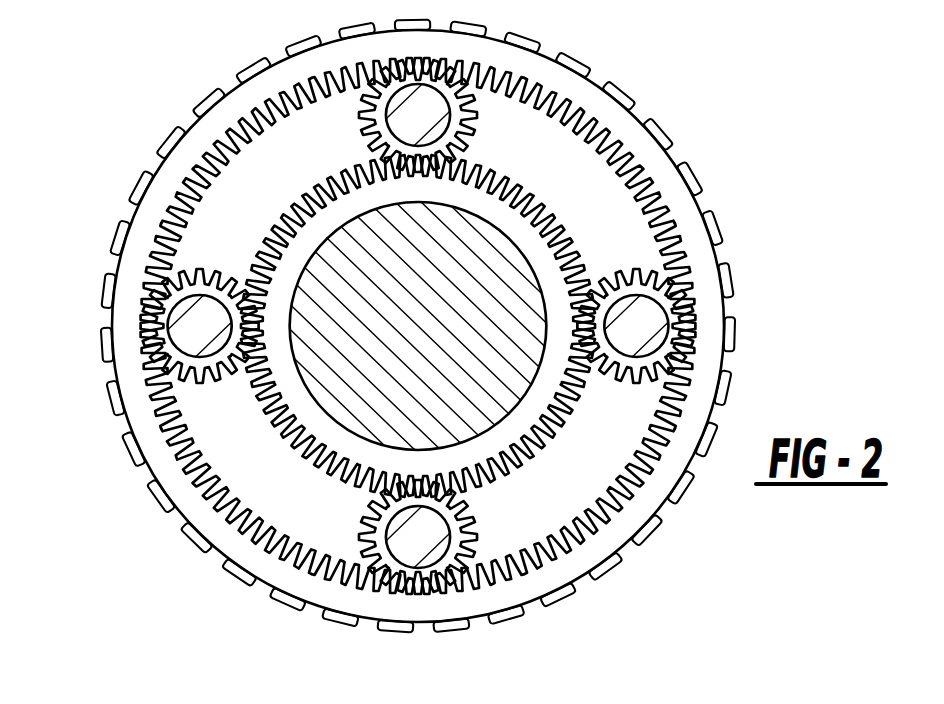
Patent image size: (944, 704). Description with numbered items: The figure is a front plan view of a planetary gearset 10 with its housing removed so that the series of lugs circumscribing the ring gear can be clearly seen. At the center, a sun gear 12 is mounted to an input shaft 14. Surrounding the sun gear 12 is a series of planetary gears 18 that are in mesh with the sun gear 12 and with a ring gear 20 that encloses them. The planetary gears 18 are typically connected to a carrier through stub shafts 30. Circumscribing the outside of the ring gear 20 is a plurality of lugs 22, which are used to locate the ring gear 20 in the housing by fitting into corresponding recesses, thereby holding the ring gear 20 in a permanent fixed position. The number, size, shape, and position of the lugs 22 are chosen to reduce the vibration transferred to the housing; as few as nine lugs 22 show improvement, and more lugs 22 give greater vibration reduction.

The planetary gearset 10 is at (638, 55).
The sun gear 12 is at (532, 209).
The input shaft 14 is at (370, 341).
The planetary gears 18 is at (357, 125).
The ring gear 20 is at (230, 540).
The lugs 22 is at (162, 143).
The stub shafts 30 is at (431, 131).